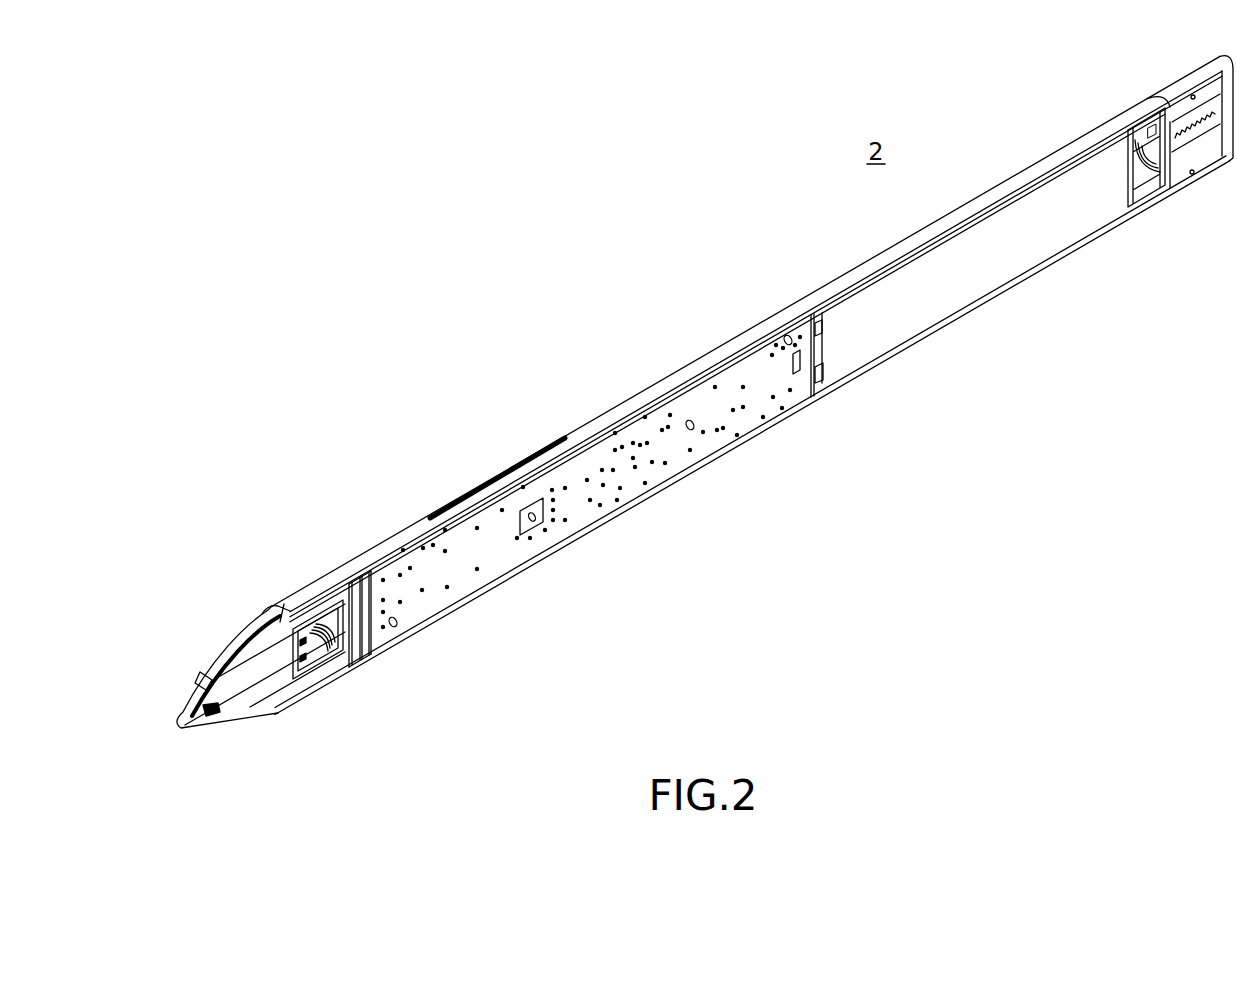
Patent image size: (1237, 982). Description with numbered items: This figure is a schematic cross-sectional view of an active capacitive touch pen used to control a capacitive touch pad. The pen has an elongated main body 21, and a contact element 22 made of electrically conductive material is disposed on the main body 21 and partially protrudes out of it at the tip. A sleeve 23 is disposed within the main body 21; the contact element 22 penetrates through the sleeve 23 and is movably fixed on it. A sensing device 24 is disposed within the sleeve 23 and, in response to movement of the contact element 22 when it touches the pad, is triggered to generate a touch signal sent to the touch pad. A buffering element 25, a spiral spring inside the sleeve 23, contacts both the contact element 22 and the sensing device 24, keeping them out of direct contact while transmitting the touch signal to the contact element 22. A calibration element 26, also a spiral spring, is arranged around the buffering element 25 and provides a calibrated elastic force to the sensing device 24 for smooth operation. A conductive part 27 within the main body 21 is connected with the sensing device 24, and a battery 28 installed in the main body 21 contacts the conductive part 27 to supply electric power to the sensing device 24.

The main body 21 is at (672, 382).
The contact element 22 is at (227, 716).
The sleeve 23 is at (283, 699).
The sensing device 24 is at (500, 548).
The buffering element 25 is at (346, 647).
The calibration element 26 is at (311, 662).
The conductive part 27 is at (820, 352).
The battery 28 is at (1000, 258).